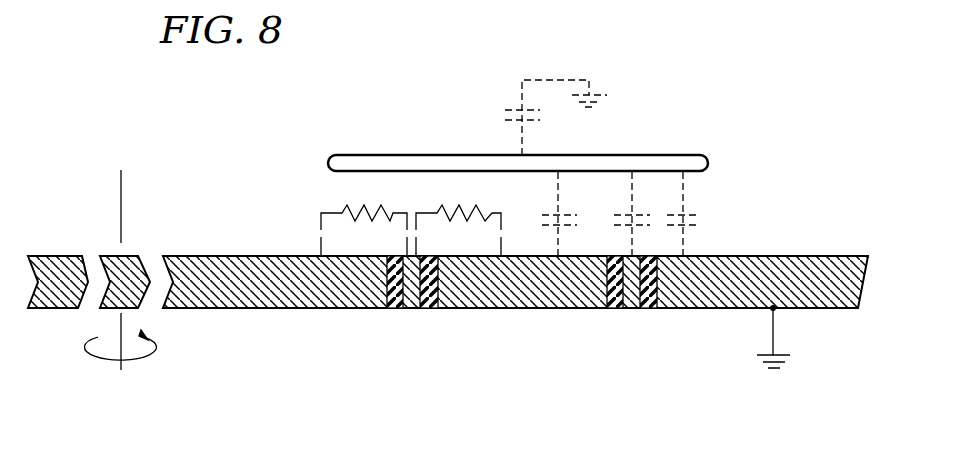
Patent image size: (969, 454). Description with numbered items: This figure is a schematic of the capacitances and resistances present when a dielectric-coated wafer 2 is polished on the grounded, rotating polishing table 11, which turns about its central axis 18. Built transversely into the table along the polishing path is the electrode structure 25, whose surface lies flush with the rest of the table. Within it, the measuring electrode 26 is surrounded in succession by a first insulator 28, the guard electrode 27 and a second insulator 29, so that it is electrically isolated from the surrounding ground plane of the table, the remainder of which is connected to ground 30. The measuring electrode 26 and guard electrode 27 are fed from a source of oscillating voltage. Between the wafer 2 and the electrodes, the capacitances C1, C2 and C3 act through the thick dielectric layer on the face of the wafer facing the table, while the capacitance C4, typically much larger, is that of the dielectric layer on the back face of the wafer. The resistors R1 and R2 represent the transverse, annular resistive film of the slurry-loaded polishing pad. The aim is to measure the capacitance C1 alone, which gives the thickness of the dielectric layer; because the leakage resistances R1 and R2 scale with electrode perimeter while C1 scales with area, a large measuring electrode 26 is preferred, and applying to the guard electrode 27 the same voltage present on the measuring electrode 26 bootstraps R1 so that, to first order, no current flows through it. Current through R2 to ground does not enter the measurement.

The wafer 2 is at (680, 155).
The polishing table 11 is at (797, 262).
The central axis 18 is at (118, 188).
The electrode structure 25 is at (492, 317).
The measuring electrode 26 is at (567, 310).
The guard electrode 27 is at (633, 312).
The insulator 28 is at (425, 310).
The insulator 29 is at (400, 308).
The ground 30 is at (765, 318).
The capacitance C1 is at (563, 214).
The capacitance C2 is at (635, 214).
The capacitance C3 is at (687, 214).
The capacitance C4 is at (545, 117).
The resistor R1 is at (458, 230).
The resistor R2 is at (364, 230).